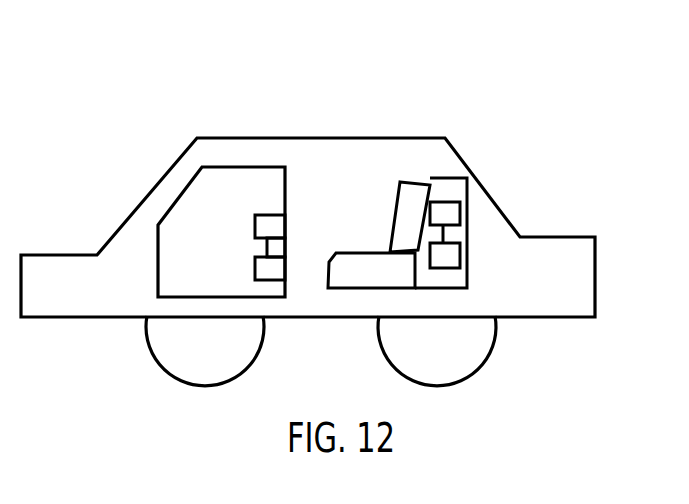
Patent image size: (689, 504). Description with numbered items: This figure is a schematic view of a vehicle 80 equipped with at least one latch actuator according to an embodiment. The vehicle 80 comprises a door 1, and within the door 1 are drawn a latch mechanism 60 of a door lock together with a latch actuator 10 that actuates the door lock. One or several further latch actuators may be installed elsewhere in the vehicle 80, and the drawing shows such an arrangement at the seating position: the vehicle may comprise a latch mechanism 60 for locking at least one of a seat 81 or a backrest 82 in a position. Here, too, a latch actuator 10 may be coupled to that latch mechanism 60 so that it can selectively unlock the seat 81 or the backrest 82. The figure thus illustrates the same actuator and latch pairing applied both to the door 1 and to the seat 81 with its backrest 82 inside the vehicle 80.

The vehicle 80 is at (86, 106).
The door 1 is at (158, 253).
The latch actuator 10 is at (255, 267).
The latch mechanism 60 is at (255, 213).
The seat 81 is at (360, 252).
The backrest 82 is at (398, 215).